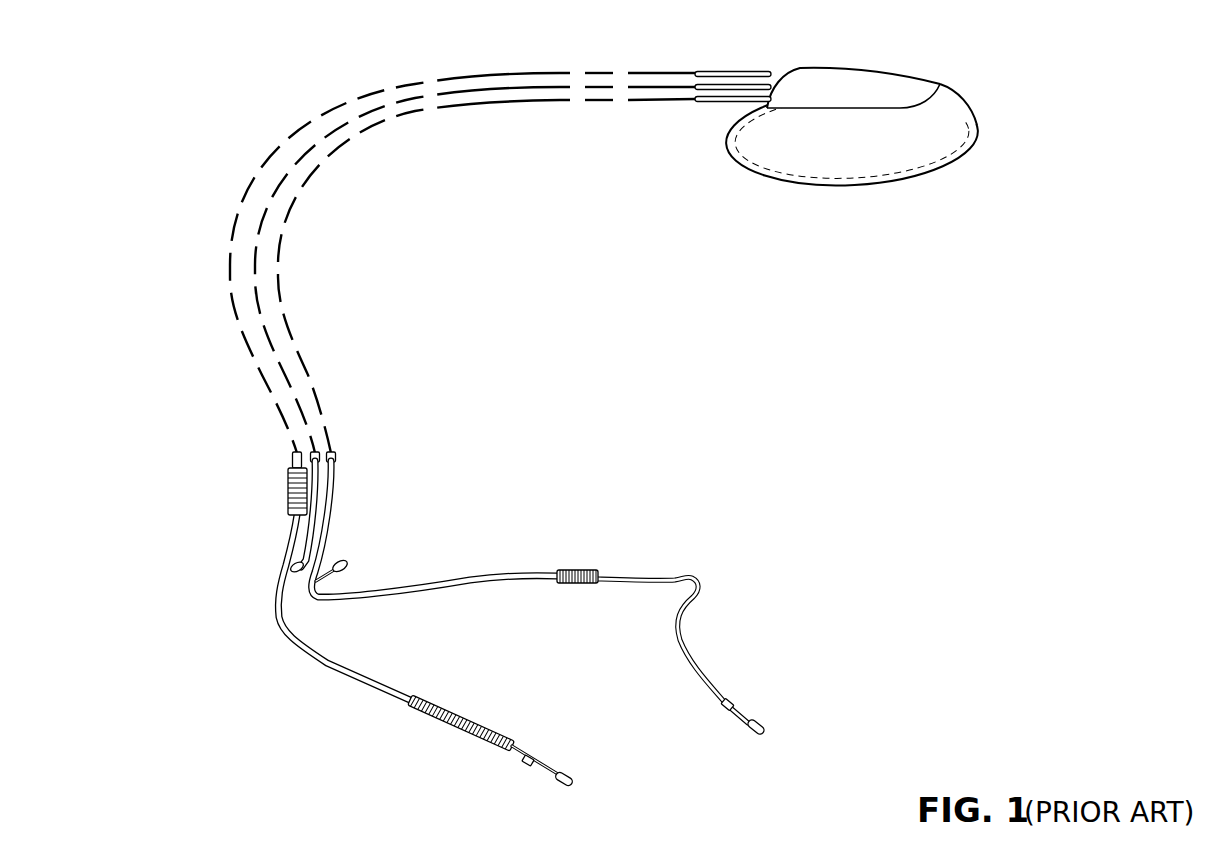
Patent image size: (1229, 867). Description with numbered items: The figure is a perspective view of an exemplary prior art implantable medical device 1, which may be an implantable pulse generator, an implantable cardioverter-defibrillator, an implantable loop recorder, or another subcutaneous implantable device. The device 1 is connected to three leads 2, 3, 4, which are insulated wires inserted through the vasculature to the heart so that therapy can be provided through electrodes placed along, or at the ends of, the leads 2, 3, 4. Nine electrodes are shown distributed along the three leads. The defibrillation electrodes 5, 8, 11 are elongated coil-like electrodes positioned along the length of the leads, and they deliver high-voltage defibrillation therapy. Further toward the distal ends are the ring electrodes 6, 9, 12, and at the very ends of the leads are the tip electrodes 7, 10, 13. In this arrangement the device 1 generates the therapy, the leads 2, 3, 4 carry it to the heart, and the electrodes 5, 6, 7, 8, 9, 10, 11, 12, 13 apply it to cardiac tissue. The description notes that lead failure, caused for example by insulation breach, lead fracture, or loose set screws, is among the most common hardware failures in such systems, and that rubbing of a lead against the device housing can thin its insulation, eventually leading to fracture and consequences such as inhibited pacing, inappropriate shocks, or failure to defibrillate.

The implantable medical device 1 is at (948, 118).
The lead 2 is at (675, 73).
The lead 3 is at (548, 86).
The lead 4 is at (520, 99).
The defibrillation electrode 5 is at (291, 475).
The ring electrode 6 is at (293, 565).
The tip electrode 7 is at (347, 562).
The defibrillation electrode 8 is at (480, 742).
The ring electrode 9 is at (523, 763).
The tip electrode 10 is at (556, 778).
The defibrillation electrode 11 is at (565, 567).
The ring electrode 12 is at (731, 703).
The tip electrode 13 is at (762, 725).